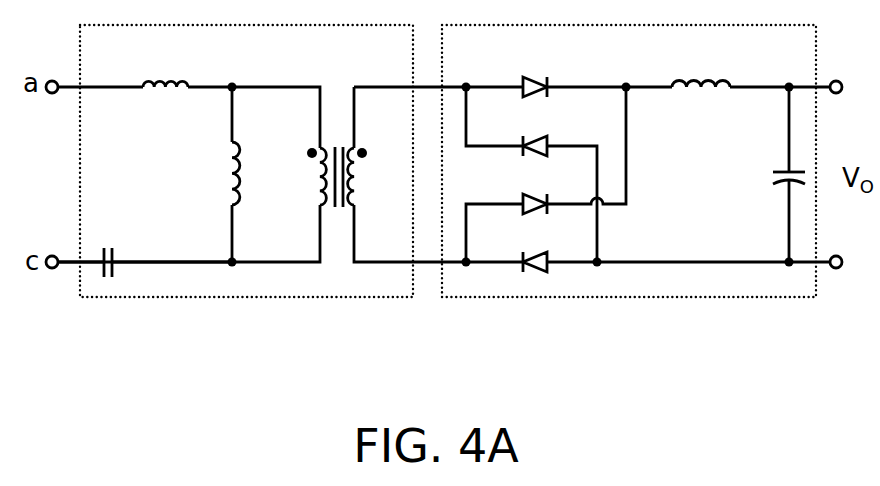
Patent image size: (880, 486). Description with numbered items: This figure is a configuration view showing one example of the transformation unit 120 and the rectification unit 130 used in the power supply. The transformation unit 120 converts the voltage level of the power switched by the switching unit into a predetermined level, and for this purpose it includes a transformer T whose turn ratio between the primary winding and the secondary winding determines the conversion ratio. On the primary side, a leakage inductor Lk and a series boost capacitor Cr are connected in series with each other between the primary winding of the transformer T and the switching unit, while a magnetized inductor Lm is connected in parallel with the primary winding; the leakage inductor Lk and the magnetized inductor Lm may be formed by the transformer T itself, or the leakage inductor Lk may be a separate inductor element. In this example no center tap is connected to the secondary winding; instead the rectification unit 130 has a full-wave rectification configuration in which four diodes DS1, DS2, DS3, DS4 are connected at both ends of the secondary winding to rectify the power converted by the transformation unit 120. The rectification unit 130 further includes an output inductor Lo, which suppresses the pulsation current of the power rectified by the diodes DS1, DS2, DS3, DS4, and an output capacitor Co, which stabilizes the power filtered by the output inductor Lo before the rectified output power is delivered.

The transformation unit 120 is at (250, 198).
The rectification unit 130 is at (636, 197).
The leakage inductor Lk is at (165, 65).
The magnetized inductor Lm is at (254, 173).
The series boost capacitor Cr is at (105, 245).
The transformer T is at (337, 131).
The output inductor Lo is at (701, 68).
The output capacitor Co is at (770, 178).
The diode DS1 is at (523, 70).
The diode DS2 is at (523, 129).
The diode DS3 is at (523, 187).
The diode DS4 is at (523, 245).